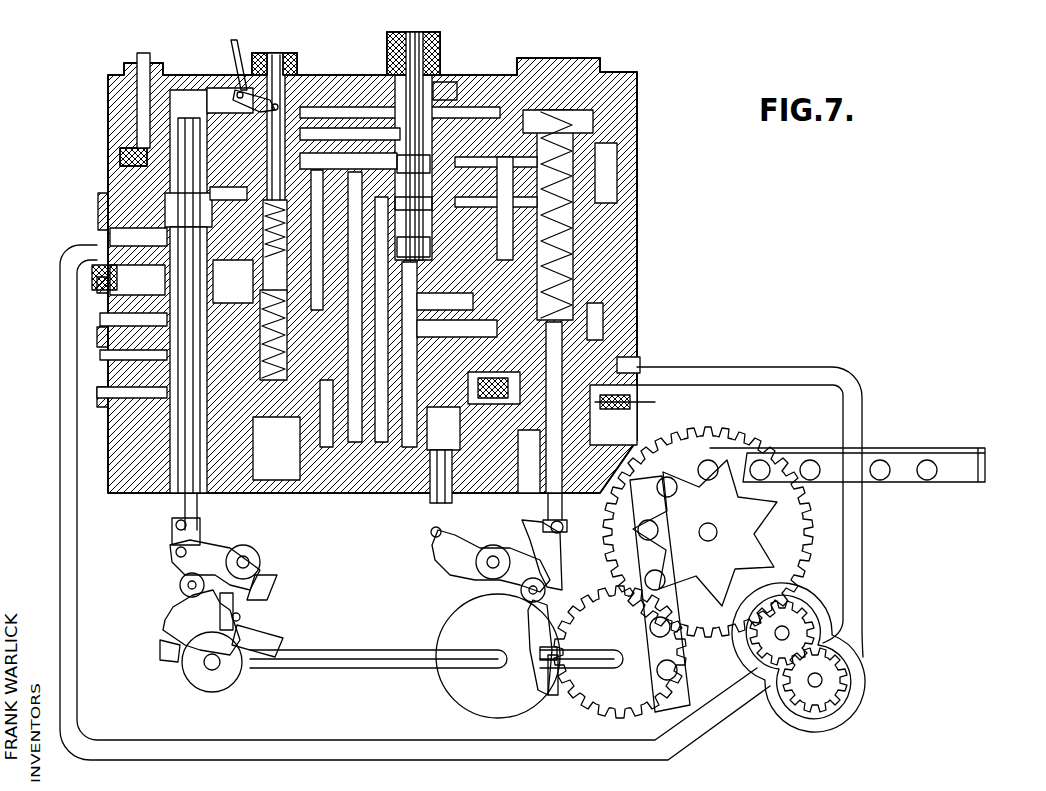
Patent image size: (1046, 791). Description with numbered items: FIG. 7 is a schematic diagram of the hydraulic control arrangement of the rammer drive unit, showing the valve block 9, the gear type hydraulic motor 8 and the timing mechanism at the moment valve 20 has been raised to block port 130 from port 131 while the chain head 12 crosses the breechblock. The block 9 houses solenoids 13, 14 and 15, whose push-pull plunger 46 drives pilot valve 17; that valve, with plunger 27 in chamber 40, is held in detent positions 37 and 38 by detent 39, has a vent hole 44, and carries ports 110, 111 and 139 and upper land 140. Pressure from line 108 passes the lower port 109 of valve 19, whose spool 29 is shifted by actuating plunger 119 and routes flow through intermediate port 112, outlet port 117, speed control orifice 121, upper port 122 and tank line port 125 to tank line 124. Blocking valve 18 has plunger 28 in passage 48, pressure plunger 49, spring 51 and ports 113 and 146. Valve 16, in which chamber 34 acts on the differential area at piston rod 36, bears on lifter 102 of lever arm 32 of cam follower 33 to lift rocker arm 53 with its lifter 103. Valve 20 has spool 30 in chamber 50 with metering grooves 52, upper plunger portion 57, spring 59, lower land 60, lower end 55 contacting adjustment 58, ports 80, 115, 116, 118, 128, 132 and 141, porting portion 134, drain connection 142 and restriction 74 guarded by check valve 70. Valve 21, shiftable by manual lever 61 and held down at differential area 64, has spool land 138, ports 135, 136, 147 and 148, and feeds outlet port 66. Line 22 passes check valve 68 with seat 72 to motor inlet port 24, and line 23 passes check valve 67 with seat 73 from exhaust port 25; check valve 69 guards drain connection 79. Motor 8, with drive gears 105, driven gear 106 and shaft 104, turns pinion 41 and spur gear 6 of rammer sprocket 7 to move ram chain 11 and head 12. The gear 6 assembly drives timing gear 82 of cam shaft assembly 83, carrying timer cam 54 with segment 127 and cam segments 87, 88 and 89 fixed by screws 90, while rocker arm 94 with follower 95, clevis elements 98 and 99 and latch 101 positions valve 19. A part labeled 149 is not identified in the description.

The spur gear 6 is at (810, 532).
The rammer sprocket 7 is at (760, 542).
The gear type hydraulic motor 8 is at (847, 650).
The valve block 9 is at (107, 218).
The ram chain 11 is at (788, 453).
The ram chain head 12 is at (983, 470).
The solenoid 13 is at (440, 35).
The solenoid 14 is at (388, 45).
The solenoid 15 is at (262, 55).
The valve 16 is at (430, 497).
The pilot valve 17 is at (413, 188).
The blocking valve 18 is at (253, 492).
The valve 19 is at (170, 443).
The valve 20 is at (608, 197).
The valve 21 is at (285, 60).
The external pipe line 22 is at (862, 553).
The external pipe line 23 is at (680, 737).
The fluid pressure inlet port 24 is at (820, 643).
The exhaust port 25 is at (770, 683).
The plunger 27 is at (480, 175).
The plunger 28 is at (233, 492).
The valve plunger 29 is at (173, 378).
The spool type element 30 is at (590, 285).
The lever arm 32 is at (457, 563).
The cam follower 33 is at (557, 600).
The valve chamber 34 is at (412, 487).
The piston rod 36 is at (457, 493).
The detent position 37 is at (390, 145).
The detent position 38 is at (436, 78).
The detent 39 is at (452, 85).
The chamber 40 is at (403, 187).
The output spur pinion 41 is at (519, 75).
The vent hole 44 is at (443, 424).
The push-pull plunger 46 is at (405, 35).
The valve passage 48 is at (315, 493).
The differential pressure-operated plunger 49 is at (287, 500).
The chamber 50 is at (597, 168).
The spring 51 is at (273, 493).
The metering grooves 52 is at (575, 340).
The rocker arm 53 is at (558, 567).
The timer cam 54 is at (443, 630).
The plunger 55 is at (567, 503).
The plunger portion 57 is at (587, 123).
The rocker arm adjustment 58 is at (548, 525).
The spring 59 is at (573, 253).
The lower land 60 is at (603, 400).
The manual operating lever 61 is at (230, 42).
The differential area 64 is at (240, 92).
The port connection 66 is at (107, 197).
The adjustable spring check valve 67 is at (92, 280).
The adjustable spring check valve 68 is at (653, 417).
The check valve 69 is at (118, 153).
The check valve arrangement 70 is at (507, 352).
The seat 72 is at (647, 398).
The seat 73 is at (143, 303).
The restriction 74 is at (500, 440).
The drain line outlet connection 79 is at (148, 55).
The bottom chamber port 80 is at (523, 437).
The cam timing gear 82 is at (587, 707).
The cam shaft assembly 83 is at (345, 672).
The latching cam segment 87 is at (537, 653).
The valve positioning cam segment 88 is at (277, 630).
The ram decelerating cam segment 89 is at (173, 623).
The machine screws 90 is at (163, 655).
The rocker arm 94 is at (180, 565).
The cam follower 95 is at (180, 590).
The valve-link clevis element 98 is at (176, 552).
The valve-link clevis element 99 is at (176, 525).
The latch 101 is at (253, 597).
The lifter 102 is at (432, 530).
The lifter 103 is at (562, 526).
The driven gear shaft 104 is at (777, 634).
The drive gears 105 is at (847, 680).
The driven gear 106 is at (753, 617).
The line 108 is at (93, 328).
The lower port 109 is at (160, 430).
The port 110 is at (380, 222).
The by-pass port 111 is at (373, 197).
The intermediate port 112 is at (150, 327).
The port 113 is at (420, 445).
The lower port 115 is at (577, 420).
The port 116 is at (530, 330).
The outlet port 117 is at (180, 375).
The outlet port 118 is at (640, 393).
The actuating plunger 119 is at (293, 172).
The speed control orifice 121 is at (167, 352).
The upper port 122 is at (200, 265).
The tank line 124 is at (93, 390).
The lower port 125 is at (167, 387).
The cam segment 127 is at (548, 690).
The port 128 is at (590, 228).
The port 130 is at (575, 240).
The port 131 is at (227, 307).
The port 132 is at (595, 157).
The porting portion 134 is at (560, 208).
The inlet port 135 is at (233, 175).
The port 136 is at (310, 148).
The land 138 is at (293, 240).
The port 139 is at (343, 107).
The upper land portion 140 is at (507, 72).
The blocked port 141 is at (603, 303).
The tank line opening 142 is at (642, 358).
The port 146 is at (147, 400).
The port 147 is at (250, 245).
The port 148 is at (227, 220).
The passage 149 is at (373, 145).